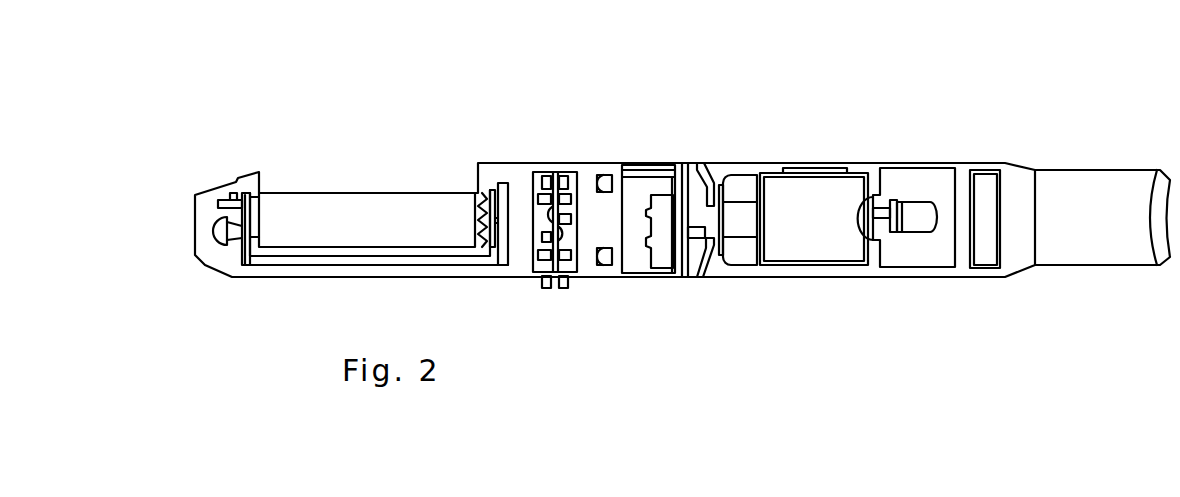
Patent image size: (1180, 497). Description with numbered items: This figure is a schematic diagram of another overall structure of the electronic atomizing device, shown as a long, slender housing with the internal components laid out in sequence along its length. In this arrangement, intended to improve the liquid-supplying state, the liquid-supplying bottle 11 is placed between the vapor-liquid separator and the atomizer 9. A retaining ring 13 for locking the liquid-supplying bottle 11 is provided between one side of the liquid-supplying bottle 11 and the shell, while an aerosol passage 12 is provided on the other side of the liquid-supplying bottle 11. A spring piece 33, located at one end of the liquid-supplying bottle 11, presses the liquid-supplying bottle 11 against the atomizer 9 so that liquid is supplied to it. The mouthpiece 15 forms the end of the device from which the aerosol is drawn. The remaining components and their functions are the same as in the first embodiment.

The atomizer 9 is at (858, 380).
The liquid-supplying bottle 11 is at (763, 368).
The aerosol passage 12 is at (807, 368).
The retaining ring 13 is at (778, 50).
The mouthpiece 15 is at (1028, 32).
The spring piece 33 is at (677, 57).